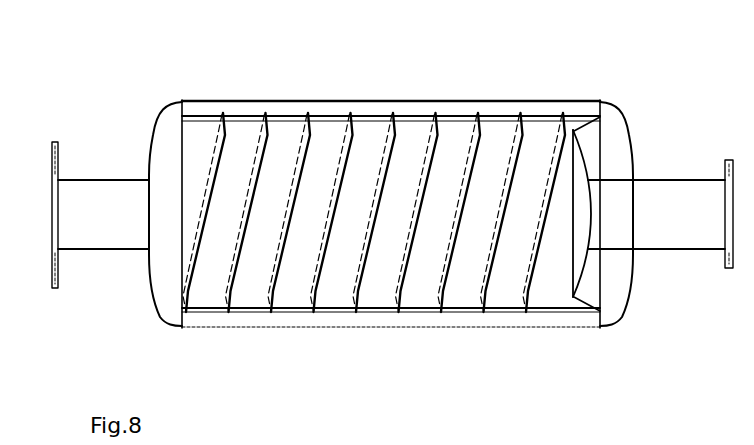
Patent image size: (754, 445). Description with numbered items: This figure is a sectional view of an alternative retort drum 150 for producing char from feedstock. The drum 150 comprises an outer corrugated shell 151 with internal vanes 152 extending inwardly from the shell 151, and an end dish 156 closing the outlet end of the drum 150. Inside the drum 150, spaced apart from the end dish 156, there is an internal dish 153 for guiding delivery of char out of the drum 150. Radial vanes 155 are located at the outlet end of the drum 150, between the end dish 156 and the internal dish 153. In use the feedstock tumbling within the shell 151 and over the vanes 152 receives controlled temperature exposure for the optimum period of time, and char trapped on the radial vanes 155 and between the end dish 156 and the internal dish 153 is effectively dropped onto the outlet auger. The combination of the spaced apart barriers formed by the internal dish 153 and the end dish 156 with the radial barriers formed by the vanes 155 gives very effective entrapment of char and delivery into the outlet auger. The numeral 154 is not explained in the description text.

The retort drum 150 is at (144, 56).
The outer corrugated shell 151 is at (244, 313).
The internal vanes 152 is at (228, 291).
The internal dish 153 is at (586, 155).
The outer shell 154 is at (500, 100).
The radial vanes 155 is at (610, 135).
The end dish 156 is at (628, 162).